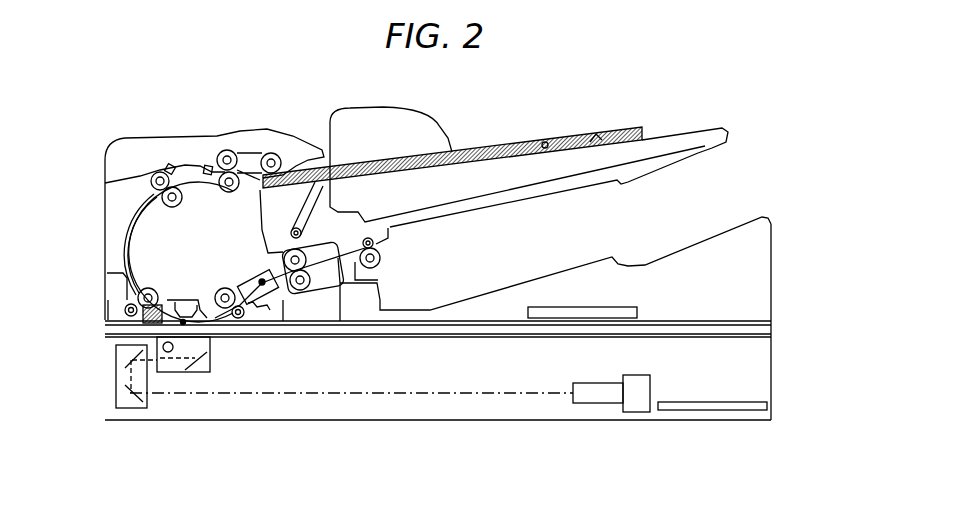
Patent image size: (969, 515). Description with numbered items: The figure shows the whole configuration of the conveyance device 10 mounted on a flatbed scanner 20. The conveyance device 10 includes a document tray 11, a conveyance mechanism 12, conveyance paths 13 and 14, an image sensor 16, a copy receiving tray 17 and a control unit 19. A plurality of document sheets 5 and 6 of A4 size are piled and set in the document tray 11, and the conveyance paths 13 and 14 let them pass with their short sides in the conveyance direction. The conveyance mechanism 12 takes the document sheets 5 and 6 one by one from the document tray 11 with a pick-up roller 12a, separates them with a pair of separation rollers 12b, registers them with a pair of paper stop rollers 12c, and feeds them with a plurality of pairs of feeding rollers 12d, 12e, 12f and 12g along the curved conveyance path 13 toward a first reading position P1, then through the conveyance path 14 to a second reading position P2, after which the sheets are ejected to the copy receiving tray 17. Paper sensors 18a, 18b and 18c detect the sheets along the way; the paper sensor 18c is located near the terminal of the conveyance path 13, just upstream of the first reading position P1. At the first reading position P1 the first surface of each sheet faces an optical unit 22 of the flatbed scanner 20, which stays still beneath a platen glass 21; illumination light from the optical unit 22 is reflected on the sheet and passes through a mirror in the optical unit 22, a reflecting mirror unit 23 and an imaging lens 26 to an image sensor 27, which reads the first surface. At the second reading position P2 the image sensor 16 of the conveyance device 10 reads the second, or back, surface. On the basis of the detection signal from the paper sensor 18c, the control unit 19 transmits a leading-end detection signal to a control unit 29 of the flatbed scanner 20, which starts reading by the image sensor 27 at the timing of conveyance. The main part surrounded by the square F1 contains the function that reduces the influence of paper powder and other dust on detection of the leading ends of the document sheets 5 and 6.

The conveyance device 10 is at (372, 78).
The flatbed scanner 20 is at (311, 425).
The platen glass 21 is at (352, 340).
The copy receiving tray 17 is at (561, 275).
The control unit 19 is at (606, 307).
The document tray 11 is at (680, 128).
The document sheet 5 is at (545, 146).
The document sheet 6 is at (612, 138).
The conveyance mechanism 12 is at (205, 234).
The conveyance path 13 is at (130, 238).
The paper sensor 18b is at (165, 166).
The paper sensor 18a is at (205, 166).
The pair of paper stop rollers 12c is at (150, 185).
The pair of separation rollers 12b is at (228, 150).
The pick-up roller 12a is at (275, 152).
The pair of feeding rollers 12d is at (148, 287).
The paper sensor 18c is at (160, 304).
The square F1 is at (140, 320).
The pair of feeding rollers 12e is at (222, 288).
The first reading position P1 is at (195, 325).
The conveyance path 14 is at (240, 275).
The image sensor 16 is at (258, 275).
The pair of feeding rollers 12f is at (313, 281).
The second reading position P2 is at (283, 300).
The pair of feeding rollers 12g is at (385, 258).
The reflecting mirror unit 23 is at (130, 410).
The optical unit 22 is at (180, 372).
The imaging lens 26 is at (595, 405).
The image sensor 27 is at (637, 412).
The control unit 29 is at (725, 412).